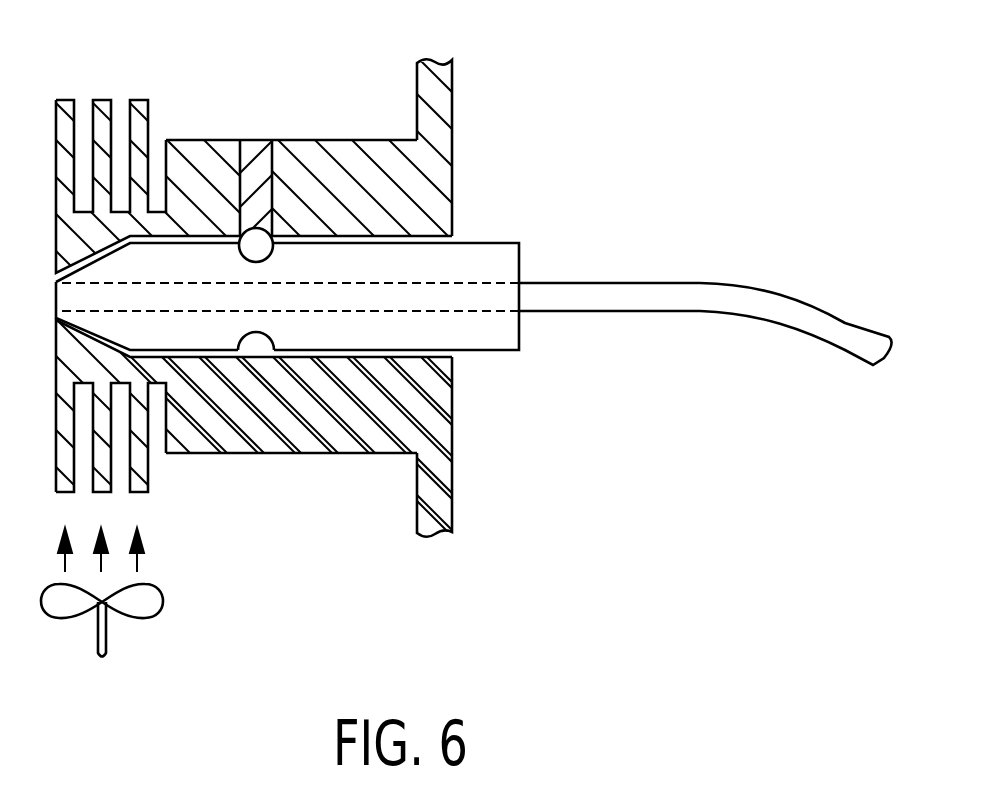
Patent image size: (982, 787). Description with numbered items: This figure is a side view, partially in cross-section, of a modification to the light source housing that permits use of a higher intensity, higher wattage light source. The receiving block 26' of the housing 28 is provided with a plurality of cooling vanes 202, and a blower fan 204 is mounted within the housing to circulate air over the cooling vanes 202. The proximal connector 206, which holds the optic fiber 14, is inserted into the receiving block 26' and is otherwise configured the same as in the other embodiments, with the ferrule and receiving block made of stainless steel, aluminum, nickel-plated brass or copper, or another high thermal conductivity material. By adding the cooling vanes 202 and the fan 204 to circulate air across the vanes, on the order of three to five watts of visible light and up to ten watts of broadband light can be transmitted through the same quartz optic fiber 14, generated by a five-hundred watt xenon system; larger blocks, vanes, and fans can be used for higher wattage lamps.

The optic fiber 14 is at (642, 298).
The receiving block 26' is at (478, 300).
The housing 28 is at (428, 125).
The cooling vanes 202 is at (72, 100).
The blower fan 204 is at (224, 636).
The proximal connector 206 is at (511, 199).